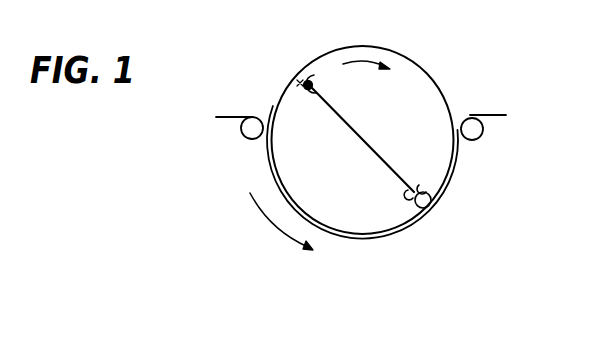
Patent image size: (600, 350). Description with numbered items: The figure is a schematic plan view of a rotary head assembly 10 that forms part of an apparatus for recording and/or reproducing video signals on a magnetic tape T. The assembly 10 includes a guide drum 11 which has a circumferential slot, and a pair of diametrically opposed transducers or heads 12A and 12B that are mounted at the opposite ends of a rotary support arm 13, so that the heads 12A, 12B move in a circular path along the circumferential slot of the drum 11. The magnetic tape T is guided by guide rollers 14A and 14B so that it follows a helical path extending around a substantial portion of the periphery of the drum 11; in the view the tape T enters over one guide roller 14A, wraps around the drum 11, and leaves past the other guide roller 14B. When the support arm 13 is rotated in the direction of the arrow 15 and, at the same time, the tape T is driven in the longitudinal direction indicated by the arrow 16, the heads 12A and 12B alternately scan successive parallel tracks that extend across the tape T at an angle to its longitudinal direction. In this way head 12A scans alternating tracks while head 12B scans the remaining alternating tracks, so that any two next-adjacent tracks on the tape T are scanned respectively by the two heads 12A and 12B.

The rotary head assembly 10 is at (397, 46).
The guide drum 11 is at (422, 70).
The transducer or head 12A is at (298, 83).
The transducer or head 12B is at (407, 211).
The rotary support arm 13 is at (355, 130).
The guide roller 14A is at (244, 133).
The guide roller 14B is at (479, 137).
The arrow 15 is at (361, 63).
The arrow 16 is at (273, 225).
The magnetic tape T is at (344, 240).